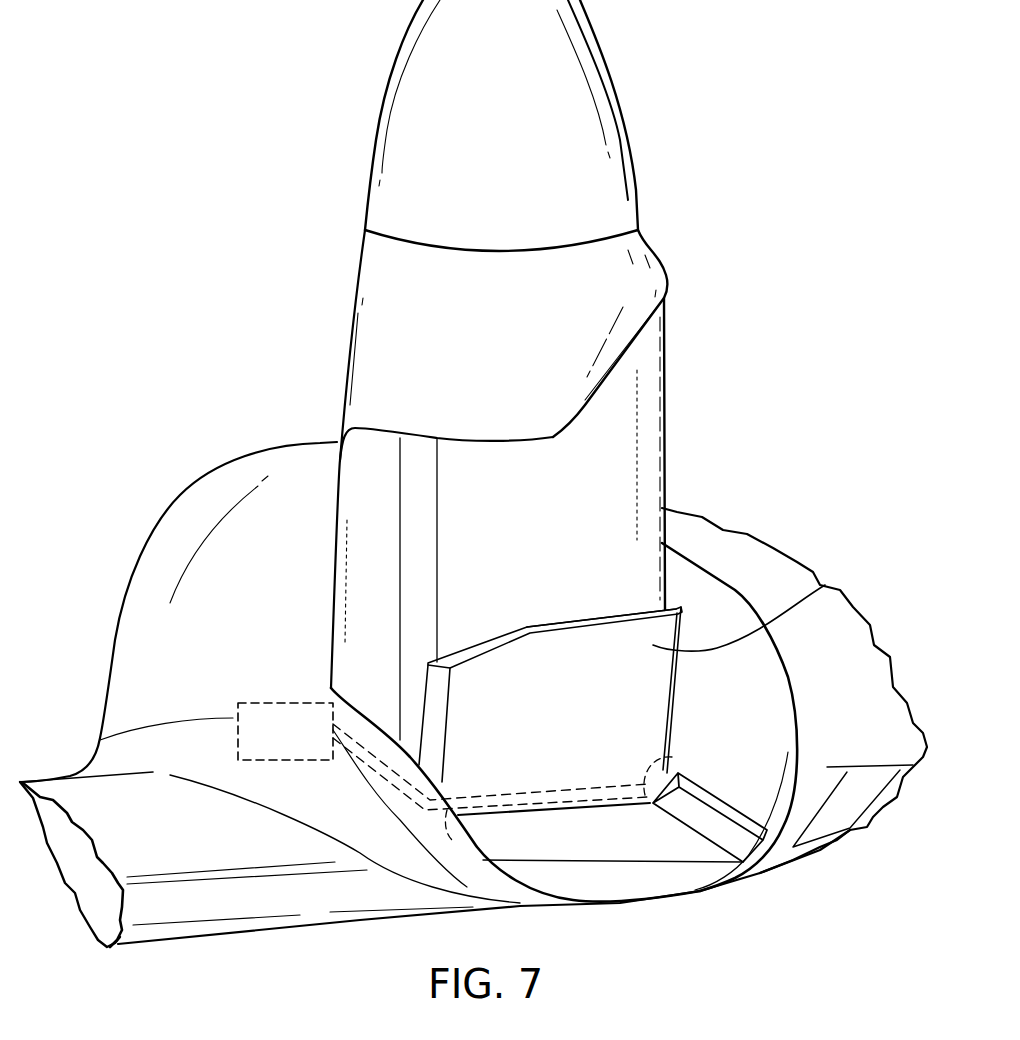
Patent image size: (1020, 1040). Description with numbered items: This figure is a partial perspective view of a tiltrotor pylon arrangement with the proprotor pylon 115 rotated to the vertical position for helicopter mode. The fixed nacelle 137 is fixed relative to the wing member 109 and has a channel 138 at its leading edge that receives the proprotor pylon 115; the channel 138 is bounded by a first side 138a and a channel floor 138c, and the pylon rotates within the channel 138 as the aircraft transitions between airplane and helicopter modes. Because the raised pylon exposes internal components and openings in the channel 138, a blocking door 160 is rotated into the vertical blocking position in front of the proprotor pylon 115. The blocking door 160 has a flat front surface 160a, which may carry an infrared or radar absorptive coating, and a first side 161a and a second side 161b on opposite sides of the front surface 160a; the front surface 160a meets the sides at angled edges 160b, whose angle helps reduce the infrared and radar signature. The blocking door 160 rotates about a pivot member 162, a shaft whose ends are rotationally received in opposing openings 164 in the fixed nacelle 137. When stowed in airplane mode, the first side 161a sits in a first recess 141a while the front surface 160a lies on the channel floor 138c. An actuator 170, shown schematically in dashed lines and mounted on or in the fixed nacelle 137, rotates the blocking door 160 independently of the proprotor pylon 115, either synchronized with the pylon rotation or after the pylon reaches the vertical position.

The wing member 109 is at (250, 923).
The proprotor pylon 115 is at (365, 273).
The fixed nacelle 137 is at (733, 547).
The channel 138 is at (818, 568).
The first side 138a is at (777, 697).
The channel floor 138c is at (663, 854).
The first recess 141a is at (783, 847).
The blocking door 160 is at (637, 615).
The front surface 160a is at (727, 614).
The edges 160b is at (447, 717).
The first side 161a is at (680, 630).
The second side 161b is at (437, 690).
The pivot member 162 is at (547, 795).
The openings 164 is at (672, 757).
The actuator 170 is at (310, 748).